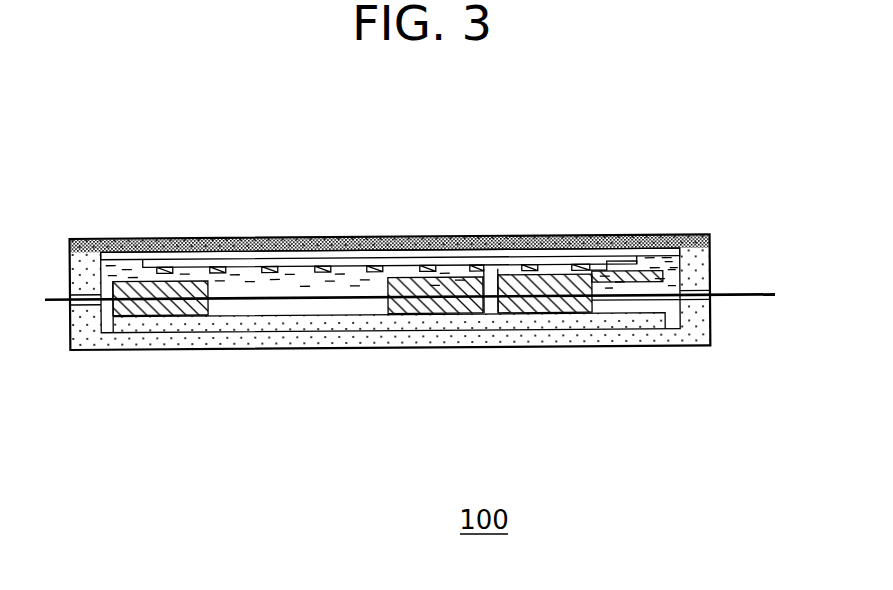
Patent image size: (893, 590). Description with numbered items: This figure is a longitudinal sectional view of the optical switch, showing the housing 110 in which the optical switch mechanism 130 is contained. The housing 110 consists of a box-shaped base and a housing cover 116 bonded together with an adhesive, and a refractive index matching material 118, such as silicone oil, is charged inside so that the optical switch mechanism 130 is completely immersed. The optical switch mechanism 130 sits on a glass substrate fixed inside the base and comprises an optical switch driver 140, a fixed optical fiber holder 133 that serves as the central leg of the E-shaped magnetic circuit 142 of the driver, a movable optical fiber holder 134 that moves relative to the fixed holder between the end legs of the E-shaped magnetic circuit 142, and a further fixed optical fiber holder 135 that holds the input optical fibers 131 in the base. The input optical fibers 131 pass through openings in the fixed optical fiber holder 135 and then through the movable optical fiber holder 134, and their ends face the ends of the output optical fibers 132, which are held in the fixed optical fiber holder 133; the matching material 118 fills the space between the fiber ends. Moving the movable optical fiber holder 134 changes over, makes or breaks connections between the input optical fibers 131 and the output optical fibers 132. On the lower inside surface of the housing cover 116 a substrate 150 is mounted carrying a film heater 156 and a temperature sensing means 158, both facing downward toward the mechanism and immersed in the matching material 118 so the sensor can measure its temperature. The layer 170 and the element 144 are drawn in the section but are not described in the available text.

The housing 110 is at (626, 332).
The housing cover 116 is at (452, 253).
The refractive index matching material 118 is at (120, 260).
The optical switch mechanism 130 is at (480, 300).
The input optical fiber 131 is at (258, 303).
The output optical fiber 132 is at (745, 300).
The fixed optical fiber holder 133 is at (563, 318).
The movable optical fiber holder 134 is at (420, 320).
The fixed optical fiber holder 135 is at (150, 320).
The optical switch driver 140 is at (488, 318).
The E-shaped magnetic circuit 142 is at (655, 265).
The bonding layer 144 is at (600, 275).
The substrate 150 is at (267, 264).
The heater 156 is at (374, 268).
The temperature sensing means 158 is at (578, 268).
The adhesive layer 170 is at (336, 330).